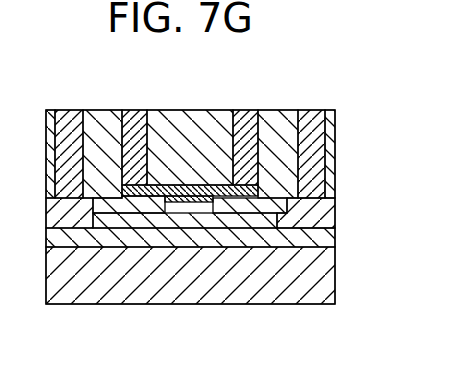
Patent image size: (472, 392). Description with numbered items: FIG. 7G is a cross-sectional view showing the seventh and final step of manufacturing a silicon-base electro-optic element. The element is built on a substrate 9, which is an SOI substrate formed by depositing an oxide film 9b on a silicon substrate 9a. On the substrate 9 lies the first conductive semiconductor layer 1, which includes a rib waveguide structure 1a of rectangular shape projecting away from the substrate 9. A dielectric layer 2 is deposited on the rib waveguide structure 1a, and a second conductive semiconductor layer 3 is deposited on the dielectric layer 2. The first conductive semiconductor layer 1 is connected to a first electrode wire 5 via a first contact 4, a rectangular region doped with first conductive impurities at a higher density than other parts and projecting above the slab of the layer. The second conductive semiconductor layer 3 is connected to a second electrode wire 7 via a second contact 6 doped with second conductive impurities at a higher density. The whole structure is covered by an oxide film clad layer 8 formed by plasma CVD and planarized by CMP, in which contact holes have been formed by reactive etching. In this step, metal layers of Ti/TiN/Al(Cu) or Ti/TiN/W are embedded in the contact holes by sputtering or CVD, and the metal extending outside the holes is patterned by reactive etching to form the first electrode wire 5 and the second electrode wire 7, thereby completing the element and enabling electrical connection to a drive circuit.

The first conductive semiconductor layer 1 is at (245, 222).
The rib waveguide structure 1a is at (197, 200).
The dielectric layer 2 is at (178, 200).
The second conductive semiconductor layer 3 is at (157, 198).
The first contact 4 is at (318, 212).
The first electrode wire 5 is at (308, 140).
The second contact 6 is at (134, 190).
The second electrode wire 7 is at (133, 120).
The oxide film clad layer 8 is at (100, 112).
The substrate 9 is at (241, 265).
The silicon substrate 9a is at (398, 229).
The oxide film 9b is at (330, 239).